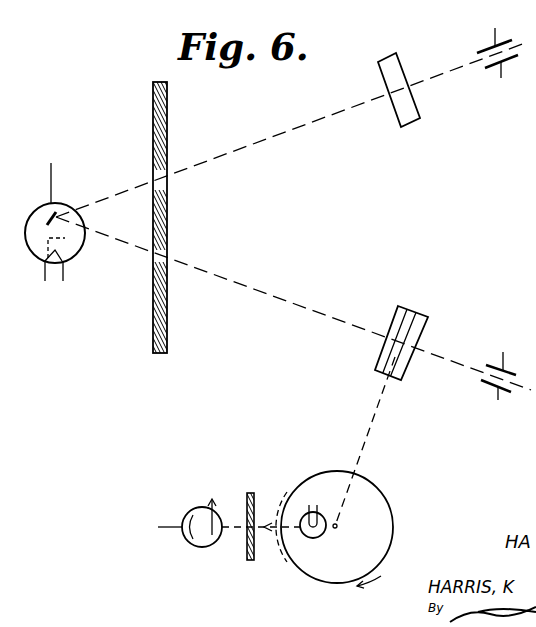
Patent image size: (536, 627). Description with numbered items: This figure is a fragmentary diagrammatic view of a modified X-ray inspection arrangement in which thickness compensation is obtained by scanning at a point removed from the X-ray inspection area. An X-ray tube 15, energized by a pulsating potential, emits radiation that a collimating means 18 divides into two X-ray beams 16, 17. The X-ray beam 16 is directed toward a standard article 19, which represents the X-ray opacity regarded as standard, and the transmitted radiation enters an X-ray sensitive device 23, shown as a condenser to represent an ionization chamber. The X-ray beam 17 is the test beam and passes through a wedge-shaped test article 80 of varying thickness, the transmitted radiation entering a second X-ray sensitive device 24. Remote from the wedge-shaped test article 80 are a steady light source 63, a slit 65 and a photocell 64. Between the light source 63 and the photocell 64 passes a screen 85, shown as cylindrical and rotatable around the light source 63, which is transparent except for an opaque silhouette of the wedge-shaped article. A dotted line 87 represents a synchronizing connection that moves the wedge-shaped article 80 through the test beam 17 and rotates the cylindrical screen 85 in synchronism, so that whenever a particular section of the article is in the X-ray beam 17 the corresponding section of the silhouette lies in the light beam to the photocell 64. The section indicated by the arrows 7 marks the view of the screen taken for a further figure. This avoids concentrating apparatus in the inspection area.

The X-ray tube 15 is at (68, 208).
The X-ray beam 16 is at (298, 131).
The X-ray beam 17 is at (275, 294).
The collimating means 18 is at (168, 222).
The standard article 19 is at (401, 112).
The X-ray sensitive device 23 is at (501, 79).
The X-ray sensitive device 24 is at (500, 352).
The wedge-shaped test article 80 is at (392, 323).
The dotted line 87 is at (379, 400).
The screen 85 is at (380, 490).
The light source 63 is at (325, 532).
The photocell 64 is at (206, 507).
The slit 65 is at (246, 531).
The section line 7- 7 is at (292, 482).